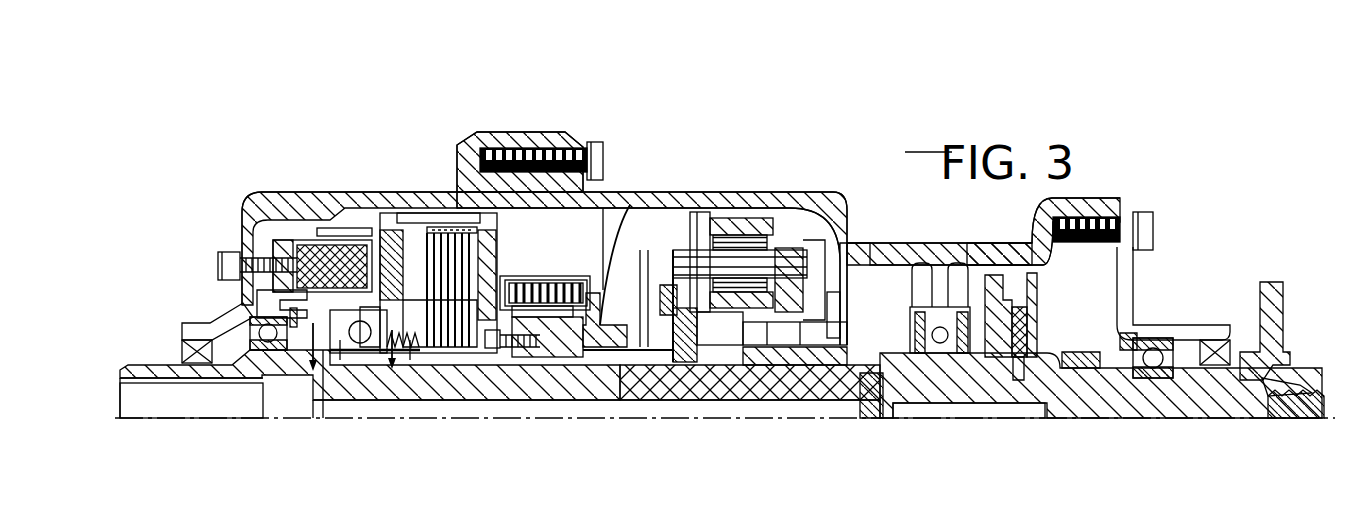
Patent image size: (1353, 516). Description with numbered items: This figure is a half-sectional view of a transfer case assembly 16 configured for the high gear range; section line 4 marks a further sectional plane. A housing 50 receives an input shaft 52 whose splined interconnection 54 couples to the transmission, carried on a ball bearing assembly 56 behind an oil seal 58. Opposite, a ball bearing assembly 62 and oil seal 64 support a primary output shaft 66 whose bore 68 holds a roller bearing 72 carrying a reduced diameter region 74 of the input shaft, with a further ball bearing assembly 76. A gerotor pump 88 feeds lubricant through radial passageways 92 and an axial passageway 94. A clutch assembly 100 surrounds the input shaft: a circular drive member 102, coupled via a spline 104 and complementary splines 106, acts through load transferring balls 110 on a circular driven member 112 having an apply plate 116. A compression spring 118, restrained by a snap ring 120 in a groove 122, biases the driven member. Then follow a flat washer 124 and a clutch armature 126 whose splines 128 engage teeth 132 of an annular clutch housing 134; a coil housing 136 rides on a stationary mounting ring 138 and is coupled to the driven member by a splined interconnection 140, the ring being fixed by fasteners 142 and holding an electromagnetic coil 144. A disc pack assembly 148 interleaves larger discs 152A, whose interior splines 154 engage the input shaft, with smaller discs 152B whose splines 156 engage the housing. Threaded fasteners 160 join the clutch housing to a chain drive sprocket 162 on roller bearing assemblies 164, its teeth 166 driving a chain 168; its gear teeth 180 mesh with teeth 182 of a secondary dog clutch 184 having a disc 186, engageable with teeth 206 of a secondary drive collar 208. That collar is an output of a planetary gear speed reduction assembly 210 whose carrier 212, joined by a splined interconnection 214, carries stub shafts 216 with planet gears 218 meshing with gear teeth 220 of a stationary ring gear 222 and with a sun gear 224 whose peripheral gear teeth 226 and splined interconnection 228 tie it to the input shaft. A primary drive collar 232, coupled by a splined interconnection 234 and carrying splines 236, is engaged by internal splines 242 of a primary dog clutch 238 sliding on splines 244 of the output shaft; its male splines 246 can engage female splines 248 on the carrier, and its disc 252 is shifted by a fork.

The section line 4- 4 is at (359, 359).
The transfer case assembly 16 is at (630, 40).
The housing 50 is at (455, 200).
The input shaft 52 is at (350, 395).
The splined interconnection 54 is at (160, 385).
The ball bearing assembly 56 is at (250, 322).
The oil seal 58 is at (178, 345).
The ball bearing assembly 62 is at (1157, 342).
The oil seal 64 is at (1238, 350).
The primary output shaft 66 is at (1300, 407).
The bore 68 is at (920, 402).
The roller bearing 72 is at (893, 420).
The reduced diameter region 74 is at (868, 410).
The ball bearing assembly 76 is at (947, 307).
The gerotor pump 88 is at (1023, 327).
The radial passageways 92 is at (398, 362).
The axial passageway 94 is at (595, 405).
The clutch assembly 100 is at (283, 160).
The circular drive member 102 is at (335, 375).
The spline 104 is at (413, 380).
The complementary splines 106 is at (280, 388).
The load transferring balls 110 is at (335, 345).
The circular driven member 112 is at (362, 360).
The apply plate 116 is at (430, 210).
The compression spring 118 is at (405, 372).
The snap ring 120 is at (450, 398).
The groove 122 is at (418, 375).
The circular flat washer 124 is at (437, 200).
The clutch armature 126 is at (377, 233).
The gear teeth or splines 128 is at (393, 233).
The splines or teeth 132 is at (470, 205).
The annular clutch housing 134 is at (617, 185).
The circular coil housing 136 is at (323, 250).
The stationary mounting ring 138 is at (265, 220).
The splined interconnection 140 is at (191, 398).
The fasteners 142 is at (262, 255).
The electromagnetic coil 144 is at (290, 232).
The disc pack assembly 148 is at (603, 180).
The larger discs 152A is at (480, 310).
The smaller discs 152B is at (497, 255).
The interior splines 154 is at (447, 370).
The splines 156 is at (505, 208).
The threaded fasteners 160 is at (516, 276).
The chain drive sprocket 162 is at (580, 345).
The roller bearing assemblies 164 is at (573, 340).
The teeth 166 is at (618, 232).
The chain 168 is at (595, 240).
The male splines or gear teeth 180 is at (618, 320).
The splines or teeth 182 is at (650, 400).
The secondary dog clutch 184 is at (618, 292).
The circular plate or disc 186 is at (630, 247).
The gear or spline teeth 206 is at (670, 347).
The secondary drive collar 208 is at (717, 373).
The planetary gear speed reduction assembly 210 is at (742, 135).
The carrier 212 is at (855, 295).
The splined interconnection 214 is at (698, 320).
The stub shafts 216 is at (690, 212).
The planet gears 218 is at (778, 240).
The gear teeth 220 is at (755, 250).
The stationary ring gear 222 is at (757, 218).
The sun gear 224 is at (700, 212).
The peripheral gear teeth 226 is at (850, 265).
The splined interconnection 228 is at (747, 395).
The primary drive collar 232 is at (825, 405).
The splined interconnection 234 is at (800, 400).
The gear teeth or splines 236 is at (722, 353).
The primary dog clutch 238 is at (840, 318).
The internal gear teeth or splines 242 is at (820, 393).
The gear teeth or splines 244 is at (890, 347).
The male gear teeth or splines 246 is at (813, 222).
The female splines 248 is at (833, 265).
The circular plate or disc 252 is at (838, 290).